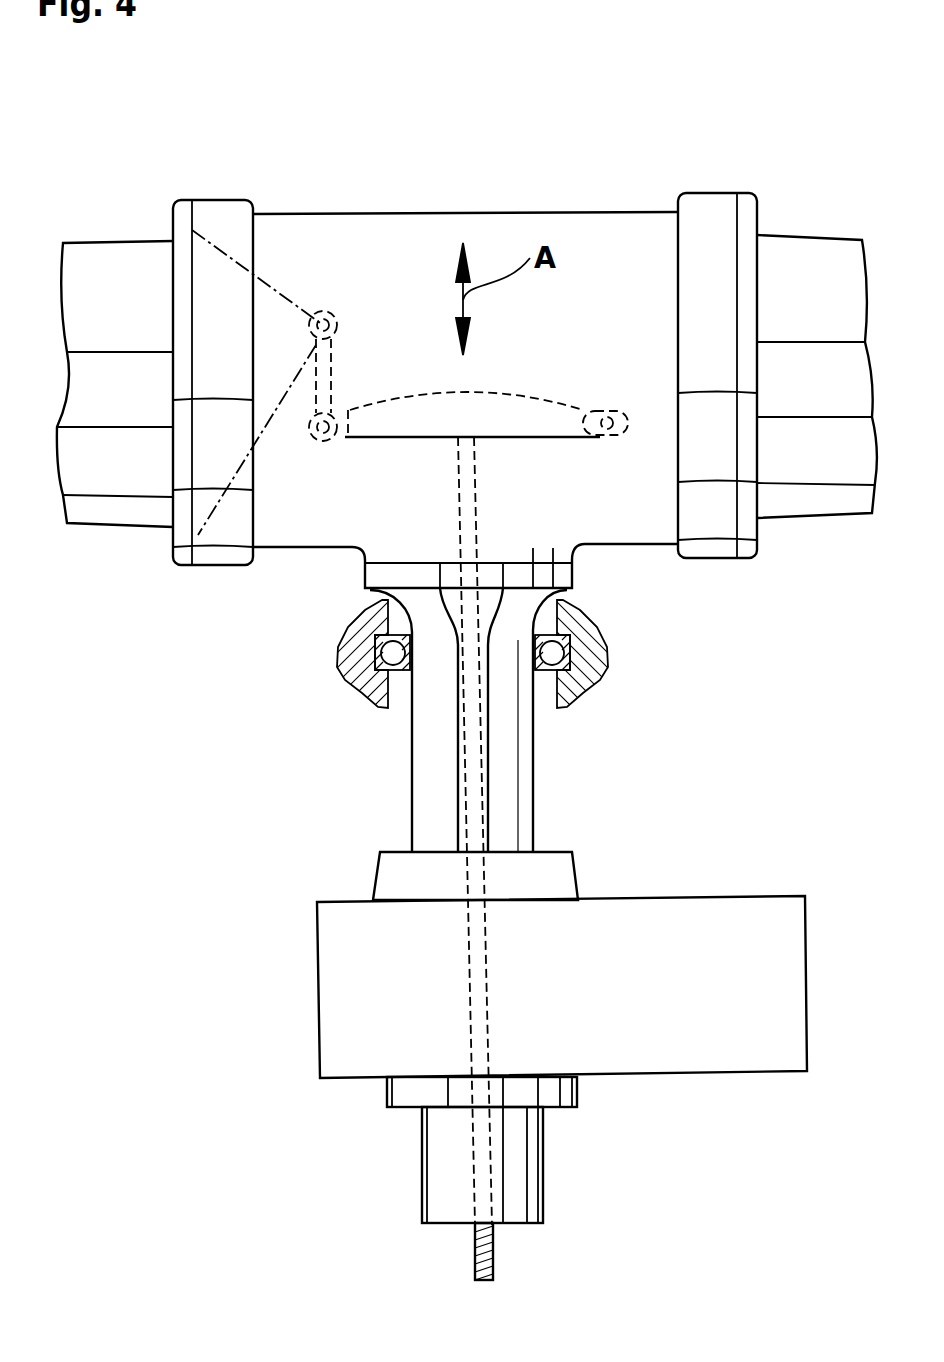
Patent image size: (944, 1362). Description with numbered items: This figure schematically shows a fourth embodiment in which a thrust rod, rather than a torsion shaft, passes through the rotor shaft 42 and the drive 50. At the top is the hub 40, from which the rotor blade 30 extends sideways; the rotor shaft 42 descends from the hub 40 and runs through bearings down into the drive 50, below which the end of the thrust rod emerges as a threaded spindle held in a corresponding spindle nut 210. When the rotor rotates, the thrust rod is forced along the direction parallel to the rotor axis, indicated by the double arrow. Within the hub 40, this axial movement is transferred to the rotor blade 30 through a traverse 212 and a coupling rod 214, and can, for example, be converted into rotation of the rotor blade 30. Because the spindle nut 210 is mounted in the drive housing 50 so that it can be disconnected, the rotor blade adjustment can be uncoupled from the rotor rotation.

The rotor blade 30 is at (84, 505).
The hub 40 is at (670, 574).
The rotor shaft 42 is at (523, 752).
The drive 50 is at (745, 912).
The spindle nut 210 is at (530, 1177).
The traverse 212 is at (541, 423).
The coupling rod 214 is at (330, 360).